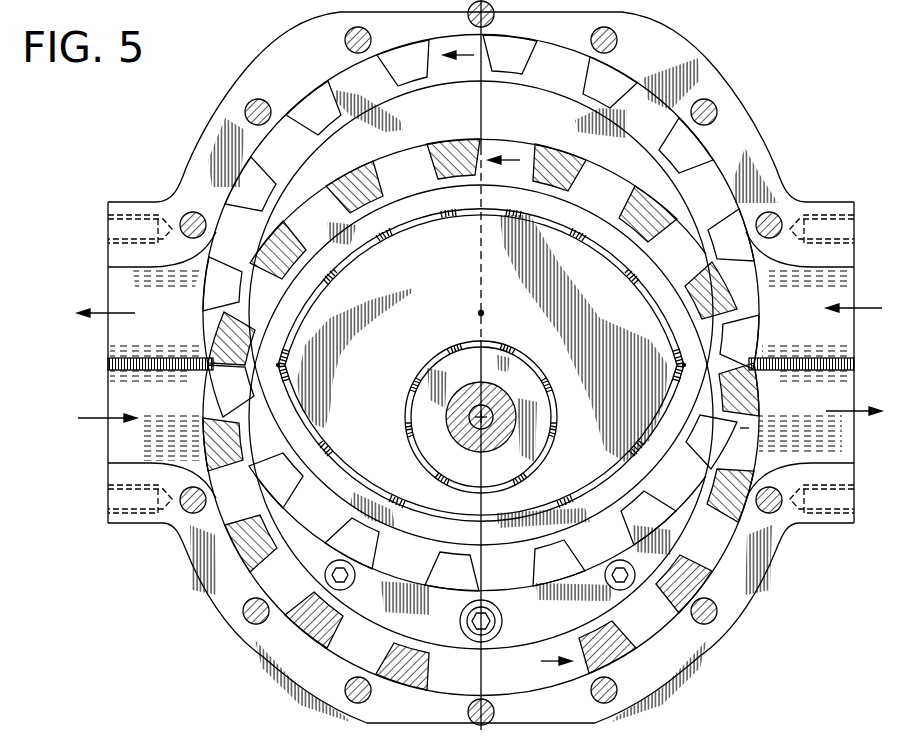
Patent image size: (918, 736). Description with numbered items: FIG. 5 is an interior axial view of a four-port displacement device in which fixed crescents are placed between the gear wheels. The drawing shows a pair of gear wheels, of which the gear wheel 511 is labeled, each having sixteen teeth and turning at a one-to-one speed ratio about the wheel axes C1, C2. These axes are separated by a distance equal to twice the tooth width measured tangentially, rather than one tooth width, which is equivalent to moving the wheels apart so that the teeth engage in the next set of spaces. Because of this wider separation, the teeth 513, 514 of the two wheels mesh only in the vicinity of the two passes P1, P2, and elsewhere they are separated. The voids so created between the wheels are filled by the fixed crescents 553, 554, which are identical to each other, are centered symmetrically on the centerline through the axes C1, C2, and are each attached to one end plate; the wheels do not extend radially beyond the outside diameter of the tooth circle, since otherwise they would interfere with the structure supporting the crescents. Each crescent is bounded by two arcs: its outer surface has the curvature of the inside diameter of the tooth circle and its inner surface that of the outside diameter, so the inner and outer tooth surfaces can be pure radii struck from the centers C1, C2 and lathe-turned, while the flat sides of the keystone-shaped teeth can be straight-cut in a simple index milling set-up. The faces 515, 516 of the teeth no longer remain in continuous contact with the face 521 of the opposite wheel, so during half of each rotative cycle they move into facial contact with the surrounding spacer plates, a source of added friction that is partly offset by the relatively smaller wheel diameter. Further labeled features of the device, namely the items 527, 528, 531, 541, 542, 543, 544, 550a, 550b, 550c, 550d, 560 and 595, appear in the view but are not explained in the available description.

The gear wheel 511 is at (752, 297).
The teeth 513 is at (423, 74).
The teeth 514 is at (472, 168).
The tooth face 515 is at (604, 72).
The tooth face 516 is at (557, 162).
The wheel face 521 is at (739, 287).
The slot 527 is at (383, 97).
The slot 528 is at (427, 570).
The housing portion 531 is at (769, 454).
The outlet passage 541 is at (112, 283).
The inlet passage 542 is at (115, 443).
The inlet passage 543 is at (846, 285).
The outlet passage 544 is at (846, 440).
The housing upper part 550a is at (746, 118).
The housing lower part 550b is at (253, 651).
The housing partition wall 550c is at (107, 360).
The housing partition wall 550d is at (856, 358).
The fixed crescent 553 is at (423, 135).
The fixed crescent 554 is at (569, 620).
The central member 560 is at (400, 296).
The bolt hole 595 is at (249, 101).
The wheel axis C1 is at (481, 313).
The wheel axis C2 is at (483, 416).
The pass P1 is at (269, 362).
The pass P2 is at (694, 358).